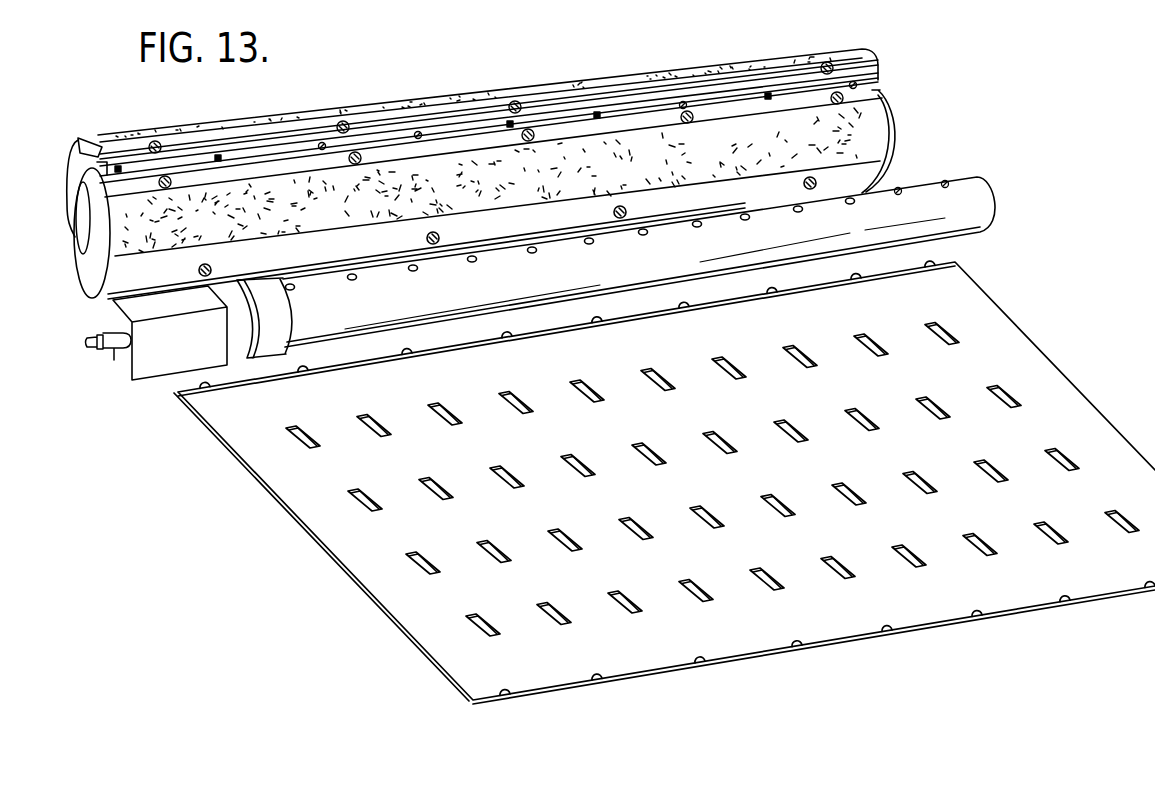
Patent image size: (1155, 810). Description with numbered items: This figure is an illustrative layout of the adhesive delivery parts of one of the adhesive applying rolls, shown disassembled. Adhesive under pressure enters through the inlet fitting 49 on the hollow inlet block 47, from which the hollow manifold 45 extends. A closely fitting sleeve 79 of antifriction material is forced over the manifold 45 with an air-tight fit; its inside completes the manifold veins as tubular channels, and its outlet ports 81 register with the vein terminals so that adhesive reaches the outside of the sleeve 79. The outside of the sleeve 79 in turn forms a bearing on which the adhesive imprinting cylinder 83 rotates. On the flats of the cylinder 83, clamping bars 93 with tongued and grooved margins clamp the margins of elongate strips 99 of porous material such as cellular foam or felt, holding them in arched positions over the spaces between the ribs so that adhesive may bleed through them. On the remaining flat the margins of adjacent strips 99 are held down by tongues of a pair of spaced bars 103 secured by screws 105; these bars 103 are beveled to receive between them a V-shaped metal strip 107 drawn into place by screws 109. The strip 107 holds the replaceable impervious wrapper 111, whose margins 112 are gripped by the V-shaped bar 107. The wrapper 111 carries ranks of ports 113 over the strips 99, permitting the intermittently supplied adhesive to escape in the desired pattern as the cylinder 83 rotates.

The hollow manifold 45 is at (270, 335).
The hollow inlet block 47 is at (165, 371).
The inlet fitting 49 is at (114, 352).
The sleeve 79 is at (978, 208).
The outlet ports 81 is at (946, 181).
The adhesive imprinting cylinder 83 is at (78, 140).
The clamping bars 93 is at (292, 265).
The elongate strips 99 is at (485, 195).
The spaced bars 103 is at (492, 146).
The screws 105 is at (300, 118).
The V-shaped metal strip 107 is at (72, 212).
The screws 109 is at (683, 100).
The wrapper 111 is at (348, 532).
The margins 112 is at (686, 310).
The ports 113 is at (480, 627).